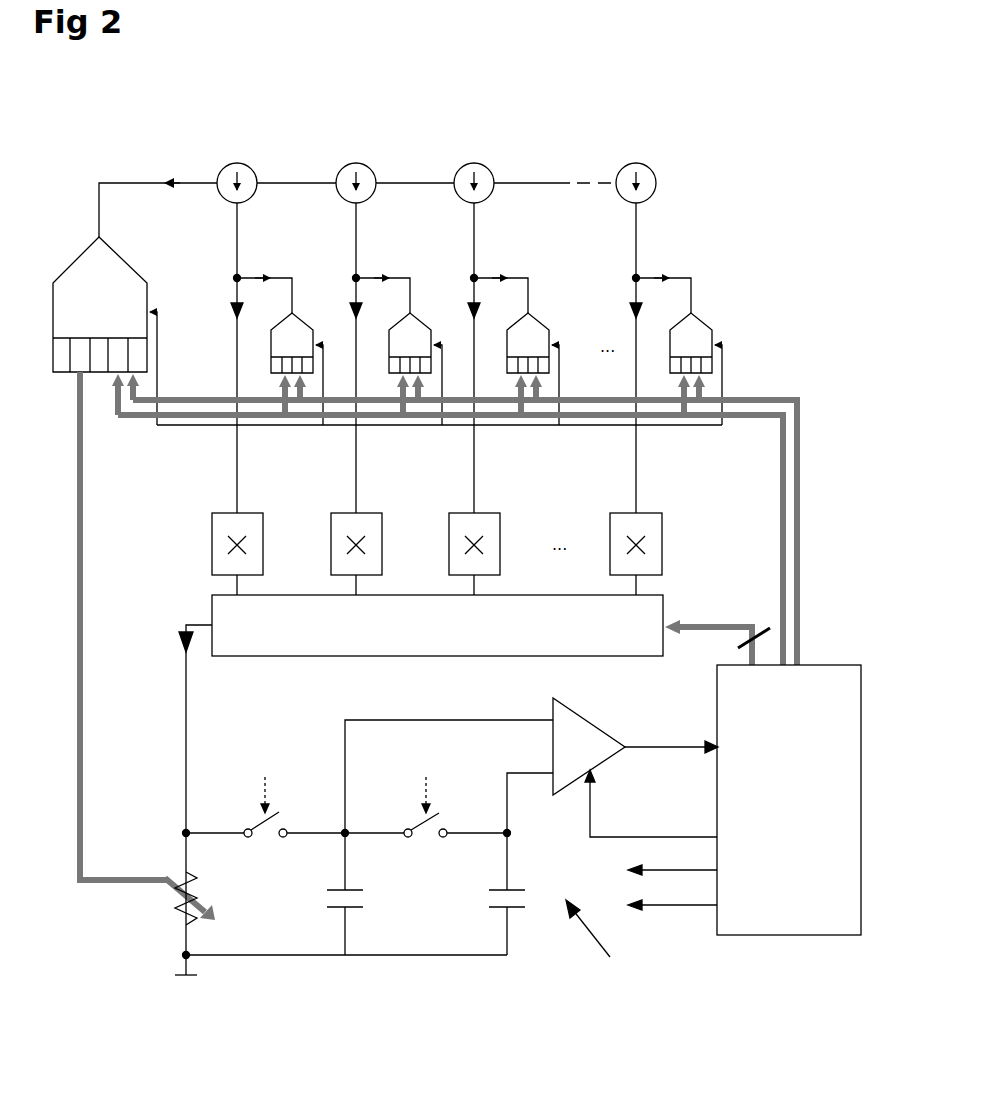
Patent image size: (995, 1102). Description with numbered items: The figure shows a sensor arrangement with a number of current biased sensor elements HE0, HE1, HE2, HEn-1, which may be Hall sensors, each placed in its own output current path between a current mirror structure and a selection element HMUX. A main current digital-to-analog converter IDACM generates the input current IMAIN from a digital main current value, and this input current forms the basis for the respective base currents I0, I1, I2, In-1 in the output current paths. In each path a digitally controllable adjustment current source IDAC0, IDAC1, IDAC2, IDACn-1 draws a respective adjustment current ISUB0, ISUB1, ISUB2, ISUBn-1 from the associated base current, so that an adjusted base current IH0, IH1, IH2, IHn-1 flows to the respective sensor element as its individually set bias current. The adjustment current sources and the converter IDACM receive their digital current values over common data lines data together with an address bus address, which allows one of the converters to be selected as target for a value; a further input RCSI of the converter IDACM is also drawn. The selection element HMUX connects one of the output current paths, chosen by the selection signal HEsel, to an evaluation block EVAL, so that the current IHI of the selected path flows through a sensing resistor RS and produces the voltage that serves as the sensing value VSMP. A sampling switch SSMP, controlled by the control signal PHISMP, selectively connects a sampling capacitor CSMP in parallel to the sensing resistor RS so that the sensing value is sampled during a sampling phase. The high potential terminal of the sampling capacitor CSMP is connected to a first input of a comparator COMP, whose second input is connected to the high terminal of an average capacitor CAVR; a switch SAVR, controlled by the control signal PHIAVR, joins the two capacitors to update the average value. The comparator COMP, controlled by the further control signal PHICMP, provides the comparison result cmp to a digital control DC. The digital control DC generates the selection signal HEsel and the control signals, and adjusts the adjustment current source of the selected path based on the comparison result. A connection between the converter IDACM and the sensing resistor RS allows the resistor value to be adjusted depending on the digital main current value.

The input current IMAIN is at (158, 193).
The base current I0 is at (276, 174).
The base current I1 is at (395, 174).
The base current I2 is at (532, 174).
The base current In-1 is at (651, 174).
The main current digital-to-analog converter IDACM is at (134, 578).
The reference current setting input RCSI is at (436, 368).
The adjusted base current IH0 is at (218, 358).
The adjusted base current IH1 is at (336, 358).
The adjusted base current IH2 is at (456, 358).
The adjusted base current IHn-1 is at (611, 358).
The adjustment current ISUB0 is at (265, 279).
The adjustment current ISUB1 is at (384, 279).
The adjustment current ISUB2 is at (507, 279).
The adjustment current ISUBn-1 is at (677, 279).
The adjustment current source IDAC0 is at (293, 386).
The adjustment current source IDAC1 is at (412, 386).
The adjustment current source IDAC2 is at (529, 386).
The adjustment current source IDACn-1 is at (701, 386).
The common data lines data is at (487, 532).
The address bus address is at (450, 540).
The sensor element HE0 is at (248, 543).
The sensor element HE1 is at (366, 543).
The sensor element HE2 is at (484, 543).
The sensor element HEn-1 is at (654, 543).
The selection element HMUX is at (437, 625).
The selection signal HEsel is at (717, 633).
The current of the selected output current path IHI is at (181, 800).
The sensing resistor RS is at (171, 898).
The sensing value VSMP is at (176, 828).
The sampling switch SSMP is at (294, 843).
The control signal ΦSMP PHISMP is at (270, 781).
The sampling capacitor CSMP is at (346, 893).
The switch SAVR is at (428, 845).
The control signal ΦAVR PHIAVR is at (561, 828).
The average capacitor CAVR is at (485, 893).
The comparator COMP is at (486, 760).
The comparison result cmp is at (671, 736).
The control signal ΦCMP PHICMP is at (679, 845).
The digital control DC is at (789, 800).
The evaluation block EVAL is at (597, 948).